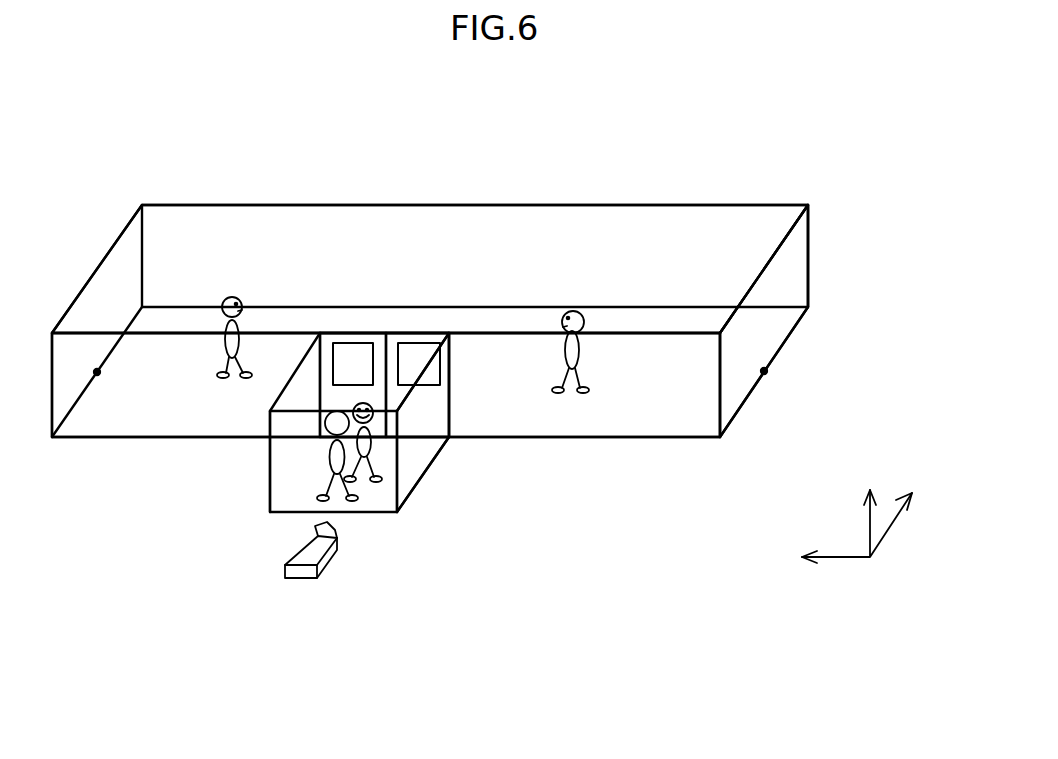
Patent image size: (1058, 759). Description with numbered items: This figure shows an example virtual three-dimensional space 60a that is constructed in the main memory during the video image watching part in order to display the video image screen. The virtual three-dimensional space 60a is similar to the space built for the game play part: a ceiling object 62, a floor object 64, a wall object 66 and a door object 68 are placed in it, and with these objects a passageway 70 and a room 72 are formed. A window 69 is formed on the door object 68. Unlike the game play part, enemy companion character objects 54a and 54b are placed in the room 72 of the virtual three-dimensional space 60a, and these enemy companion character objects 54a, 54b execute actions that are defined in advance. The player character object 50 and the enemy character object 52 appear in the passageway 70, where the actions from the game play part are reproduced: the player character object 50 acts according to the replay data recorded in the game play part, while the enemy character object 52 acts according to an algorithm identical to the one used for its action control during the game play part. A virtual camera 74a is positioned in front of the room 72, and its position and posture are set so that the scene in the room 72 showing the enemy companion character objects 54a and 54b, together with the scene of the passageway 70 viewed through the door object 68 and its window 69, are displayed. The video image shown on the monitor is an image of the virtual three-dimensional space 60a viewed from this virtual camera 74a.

The virtual three-dimensional space 60a is at (320, 183).
The passageway 70 is at (568, 450).
The room 72 is at (480, 547).
The ceiling object 62 is at (770, 275).
The floor object 64 is at (786, 342).
The wall object 66 is at (808, 241).
The door object 68 is at (450, 408).
The window 69 is at (438, 362).
The player character object 50 is at (582, 347).
The enemy character object 52 is at (225, 334).
The enemy companion character object 54a is at (372, 443).
The enemy companion character object 54b is at (327, 453).
The virtual camera 74a is at (327, 563).